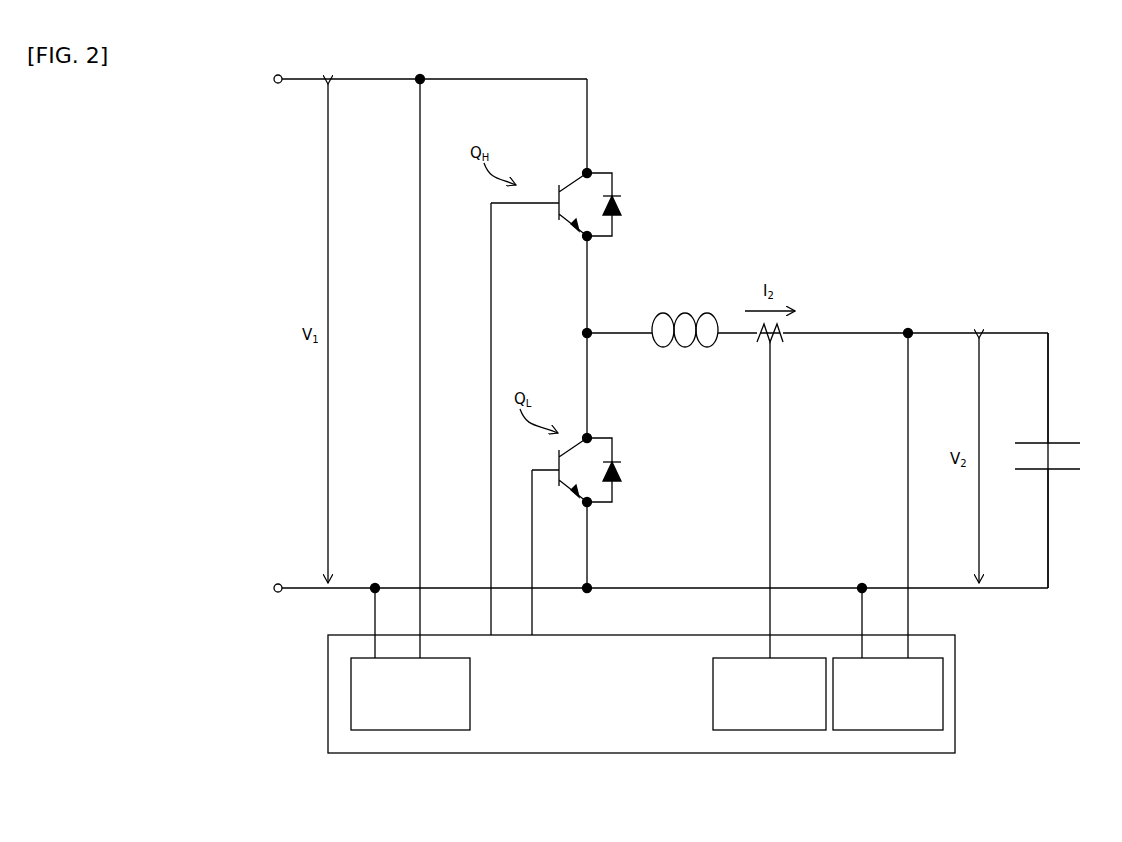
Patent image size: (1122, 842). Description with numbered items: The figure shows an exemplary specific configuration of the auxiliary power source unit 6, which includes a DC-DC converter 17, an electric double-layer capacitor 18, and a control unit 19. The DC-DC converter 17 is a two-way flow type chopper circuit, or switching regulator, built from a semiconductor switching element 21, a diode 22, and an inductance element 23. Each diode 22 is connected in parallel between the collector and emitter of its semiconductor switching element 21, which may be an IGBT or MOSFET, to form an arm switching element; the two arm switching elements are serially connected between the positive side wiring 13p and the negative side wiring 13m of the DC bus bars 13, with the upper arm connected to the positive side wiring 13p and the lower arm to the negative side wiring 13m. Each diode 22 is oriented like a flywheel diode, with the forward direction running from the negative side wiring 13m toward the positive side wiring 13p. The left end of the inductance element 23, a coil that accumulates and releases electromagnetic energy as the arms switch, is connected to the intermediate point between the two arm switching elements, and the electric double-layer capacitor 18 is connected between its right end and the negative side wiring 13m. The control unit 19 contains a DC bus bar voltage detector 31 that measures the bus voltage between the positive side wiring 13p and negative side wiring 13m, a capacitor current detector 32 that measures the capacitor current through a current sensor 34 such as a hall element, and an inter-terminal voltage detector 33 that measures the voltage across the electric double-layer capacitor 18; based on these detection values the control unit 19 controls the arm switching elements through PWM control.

The auxiliary power source unit 6 is at (1022, 149).
The DC bus bars 13 is at (446, 12).
The positive side wiring 13p is at (360, 79).
The negative side wiring 13m is at (356, 588).
The DC-DC converter 17 is at (755, 214).
The electric double-layer capacitor 18 is at (1060, 443).
The control unit 19 is at (958, 686).
The semiconductor switching element 21 is at (559, 193).
The diode 22 is at (613, 195).
The inductance element 23 is at (676, 313).
The DC bus bar voltage detector 31 is at (392, 730).
The capacitor current detector 32 is at (767, 730).
The inter-terminal voltage detector 33 is at (885, 730).
The current sensor 34 is at (782, 331).